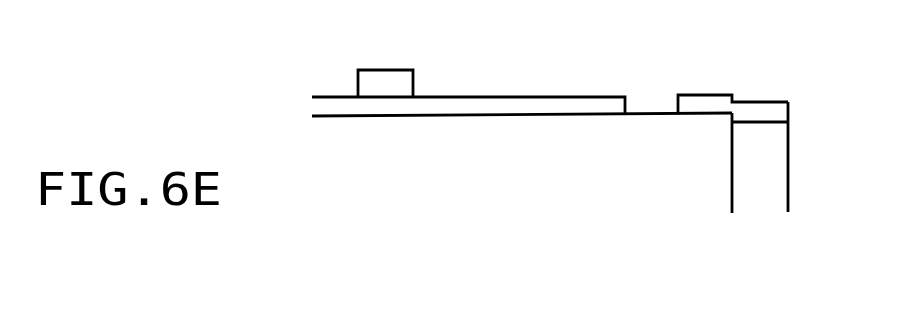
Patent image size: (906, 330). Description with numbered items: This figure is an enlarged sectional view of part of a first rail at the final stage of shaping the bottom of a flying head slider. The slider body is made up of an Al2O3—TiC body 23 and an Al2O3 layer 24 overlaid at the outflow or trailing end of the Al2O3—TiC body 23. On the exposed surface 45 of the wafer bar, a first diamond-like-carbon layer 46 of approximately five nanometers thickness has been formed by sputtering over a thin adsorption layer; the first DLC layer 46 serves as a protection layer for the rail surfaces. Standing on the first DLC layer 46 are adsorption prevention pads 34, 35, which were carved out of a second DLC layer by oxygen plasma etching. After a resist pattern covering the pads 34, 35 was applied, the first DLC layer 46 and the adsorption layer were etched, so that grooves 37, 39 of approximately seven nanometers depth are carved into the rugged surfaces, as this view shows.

The Al2O3—TiC body 23 is at (720, 197).
The Al2O3 layer 24 is at (780, 172).
The adsorption prevention pad 34 is at (381, 57).
The adsorption prevention pad 35 is at (382, 70).
The groove 37 is at (693, 70).
The groove 39 is at (627, 97).
The exposed surface 45 is at (331, 115).
The first diamond-like-carbon layer 46 is at (452, 97).